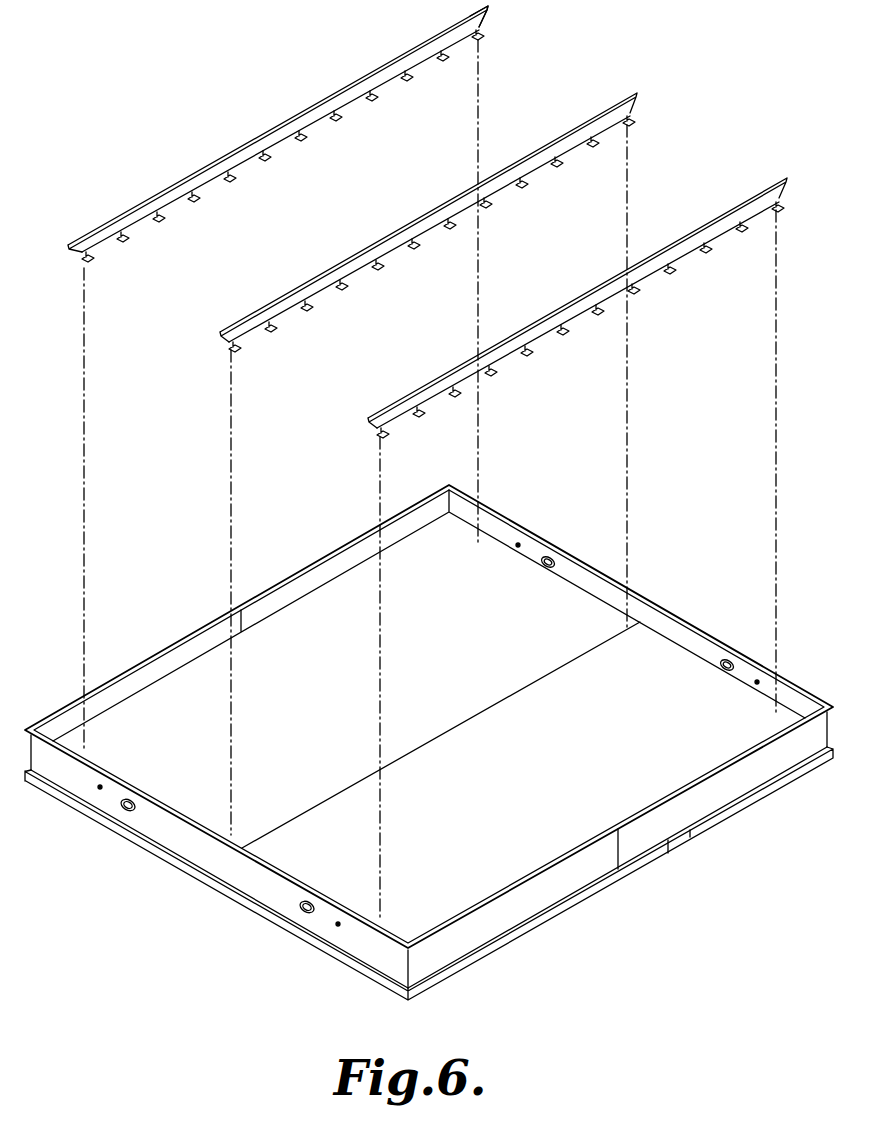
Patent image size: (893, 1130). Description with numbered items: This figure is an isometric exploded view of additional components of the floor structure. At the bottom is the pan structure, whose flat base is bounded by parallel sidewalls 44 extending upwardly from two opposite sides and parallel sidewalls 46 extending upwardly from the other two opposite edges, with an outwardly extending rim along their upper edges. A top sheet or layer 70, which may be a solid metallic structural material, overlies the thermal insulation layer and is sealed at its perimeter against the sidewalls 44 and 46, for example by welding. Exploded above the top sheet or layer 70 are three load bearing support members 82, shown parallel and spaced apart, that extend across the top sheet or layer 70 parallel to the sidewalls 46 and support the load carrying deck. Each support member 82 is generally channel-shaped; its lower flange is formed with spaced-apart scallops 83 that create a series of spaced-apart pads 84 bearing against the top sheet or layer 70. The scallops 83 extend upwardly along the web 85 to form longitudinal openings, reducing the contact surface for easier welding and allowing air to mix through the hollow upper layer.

The sidewalls 44 is at (205, 858).
The sidewalls 46 is at (172, 640).
The top sheet or layer 70 is at (325, 596).
The load bearing support members 82 is at (347, 76).
The scallops 83 is at (425, 60).
The pads 84 is at (480, 34).
The web 85 is at (482, 23).